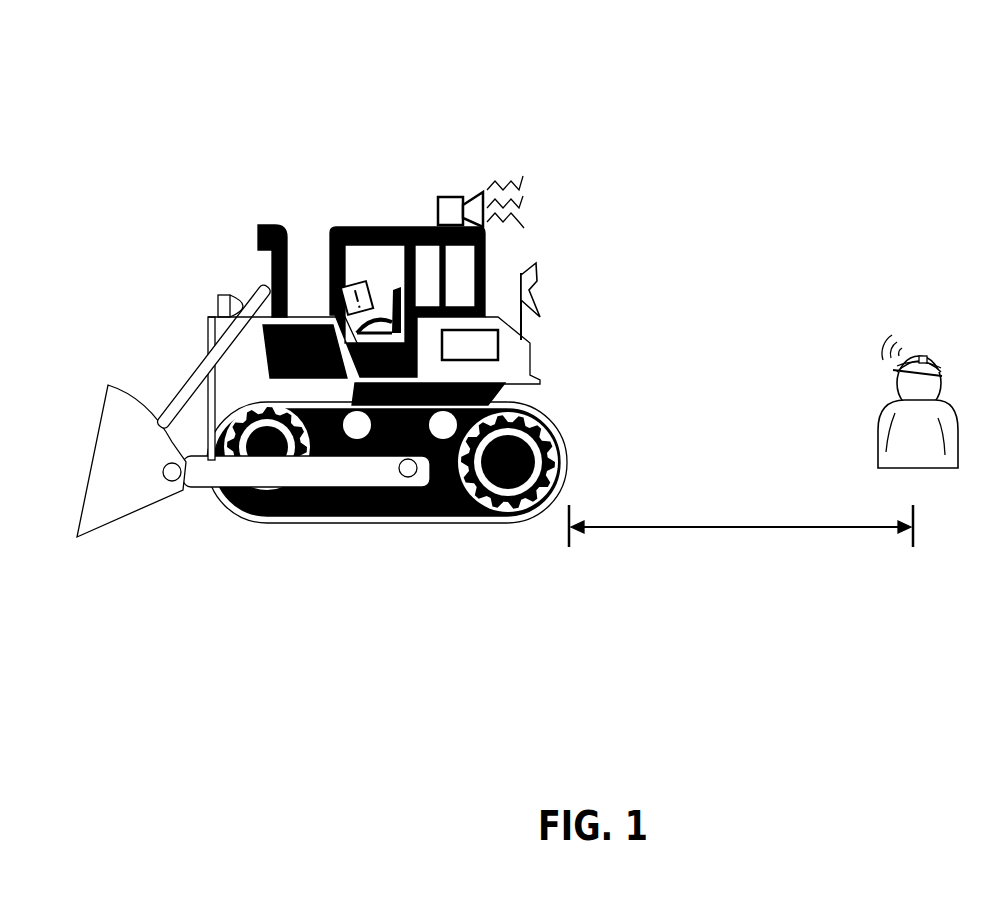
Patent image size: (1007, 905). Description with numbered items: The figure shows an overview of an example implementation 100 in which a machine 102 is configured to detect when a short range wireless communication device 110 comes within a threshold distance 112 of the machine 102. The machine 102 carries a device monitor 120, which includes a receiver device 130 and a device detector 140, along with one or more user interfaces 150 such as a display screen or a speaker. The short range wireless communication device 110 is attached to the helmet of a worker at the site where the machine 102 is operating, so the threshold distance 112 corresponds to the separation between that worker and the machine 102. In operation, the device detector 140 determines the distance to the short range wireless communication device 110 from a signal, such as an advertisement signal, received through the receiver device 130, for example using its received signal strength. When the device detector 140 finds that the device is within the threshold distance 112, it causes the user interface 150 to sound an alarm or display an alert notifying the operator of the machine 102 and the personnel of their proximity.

The example implementation 100 is at (143, 52).
The machine 102 is at (167, 258).
The short range wireless communication device 110 is at (937, 355).
The threshold distance 112 is at (737, 528).
The device monitor 120 is at (582, 178).
The receiver device 130 is at (530, 265).
The device detector 140 is at (498, 342).
The user interface 150 is at (354, 283).